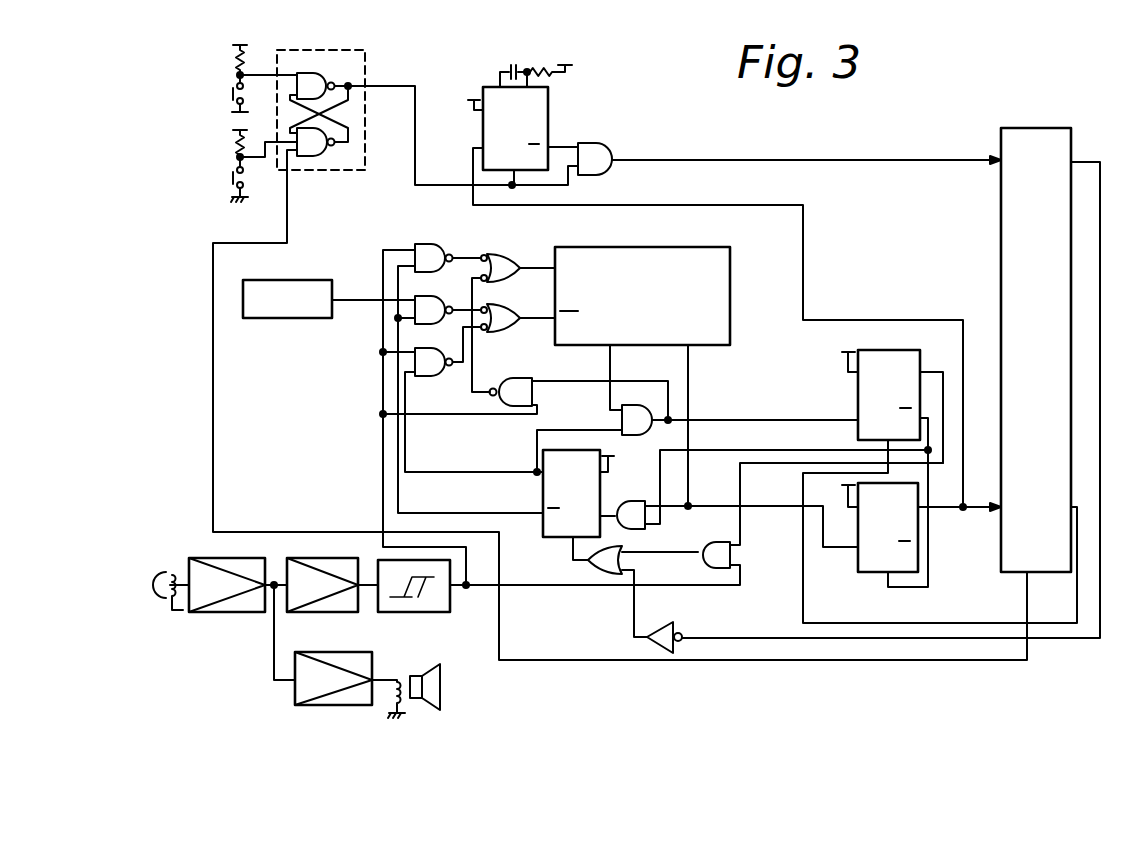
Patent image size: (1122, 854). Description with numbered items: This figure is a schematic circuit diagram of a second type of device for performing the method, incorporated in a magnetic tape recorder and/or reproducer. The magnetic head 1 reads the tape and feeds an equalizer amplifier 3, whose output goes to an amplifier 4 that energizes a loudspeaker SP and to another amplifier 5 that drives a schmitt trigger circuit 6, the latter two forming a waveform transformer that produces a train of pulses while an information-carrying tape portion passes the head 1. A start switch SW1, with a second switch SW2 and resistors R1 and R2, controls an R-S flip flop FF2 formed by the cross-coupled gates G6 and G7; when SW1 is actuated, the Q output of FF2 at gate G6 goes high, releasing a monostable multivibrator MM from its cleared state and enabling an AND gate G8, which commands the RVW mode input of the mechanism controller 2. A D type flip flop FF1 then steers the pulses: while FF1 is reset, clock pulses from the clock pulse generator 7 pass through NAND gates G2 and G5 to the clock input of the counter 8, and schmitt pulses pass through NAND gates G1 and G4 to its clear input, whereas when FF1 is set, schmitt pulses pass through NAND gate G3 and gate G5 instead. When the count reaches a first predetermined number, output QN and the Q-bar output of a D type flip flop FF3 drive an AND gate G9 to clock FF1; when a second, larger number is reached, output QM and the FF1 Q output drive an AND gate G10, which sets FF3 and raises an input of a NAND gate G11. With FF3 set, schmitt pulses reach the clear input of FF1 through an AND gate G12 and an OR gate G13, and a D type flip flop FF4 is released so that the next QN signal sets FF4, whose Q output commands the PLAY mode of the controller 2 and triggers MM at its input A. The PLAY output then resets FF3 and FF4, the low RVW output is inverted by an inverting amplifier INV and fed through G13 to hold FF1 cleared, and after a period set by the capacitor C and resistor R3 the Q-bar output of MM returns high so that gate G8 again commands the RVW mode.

The magnetic head 1 is at (160, 618).
The mechanism controller 2 is at (1036, 128).
The equalizer amplifier 3 is at (225, 612).
The amplifier 4 is at (295, 697).
The amplifier 5 is at (330, 612).
The schmitt trigger circuit 6 is at (418, 612).
The clock pulse generator 7 is at (292, 318).
The counter 8 is at (708, 247).
The resistor R1 is at (228, 63).
The resistor R2 is at (228, 147).
The resistor R3 is at (548, 62).
The capacitor C is at (509, 64).
The start switch SW1 is at (230, 101).
The switch SW2 is at (254, 186).
The NAND gate G1 is at (425, 244).
The NAND gate G2 is at (425, 296).
The NAND gate G3 is at (425, 348).
The NAND gate G4 is at (497, 254).
The NAND gate G5 is at (500, 304).
The gate G6 is at (322, 76).
The gate G7 is at (330, 154).
The AND gate G8 is at (602, 146).
The AND gate G9 is at (637, 493).
The AND gate G10 is at (636, 395).
The NAND gate G11 is at (513, 378).
The AND gate G12 is at (718, 534).
The OR gate G13 is at (622, 544).
The D type flip flop FF1 is at (562, 540).
The R-S flip flop FF2 is at (342, 172).
The D type flip flop FF3 is at (878, 350).
The D type flip flop FF4 is at (858, 568).
The monostable multivibrator MM is at (548, 108).
The inverting amplifier INV is at (680, 642).
The loudspeaker SP is at (441, 688).